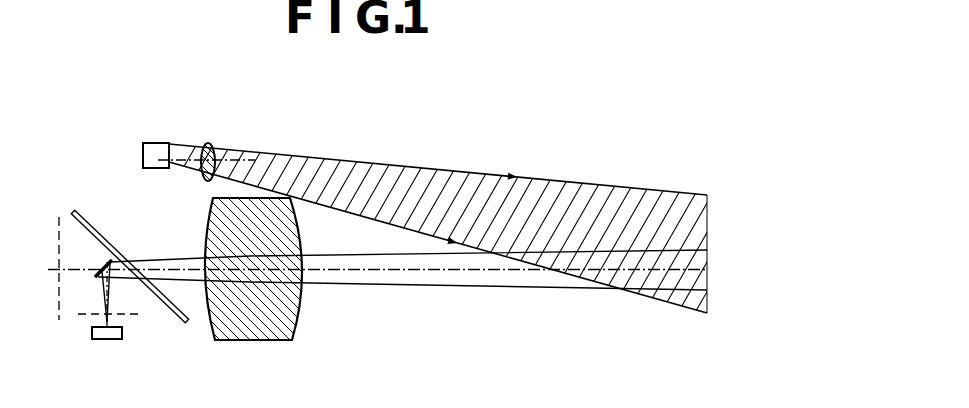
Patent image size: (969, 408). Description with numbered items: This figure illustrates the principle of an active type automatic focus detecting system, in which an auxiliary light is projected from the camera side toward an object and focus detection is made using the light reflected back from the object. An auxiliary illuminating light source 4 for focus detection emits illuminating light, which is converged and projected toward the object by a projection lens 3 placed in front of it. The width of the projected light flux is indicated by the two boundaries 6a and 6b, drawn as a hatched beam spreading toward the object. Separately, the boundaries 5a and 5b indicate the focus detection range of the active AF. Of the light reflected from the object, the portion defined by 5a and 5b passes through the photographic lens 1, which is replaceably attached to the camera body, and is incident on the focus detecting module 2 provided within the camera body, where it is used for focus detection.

The photographic lens 1 is at (268, 333).
The focus detecting module 2 is at (112, 340).
The projection lens 3 is at (210, 143).
The auxiliary illuminating light source 4 is at (157, 143).
The focus detection range boundary 5a is at (407, 255).
The focus detection range boundary 5b is at (400, 285).
The projected light flux width boundary 6a is at (377, 160).
The projected light flux width boundary 6b is at (348, 212).